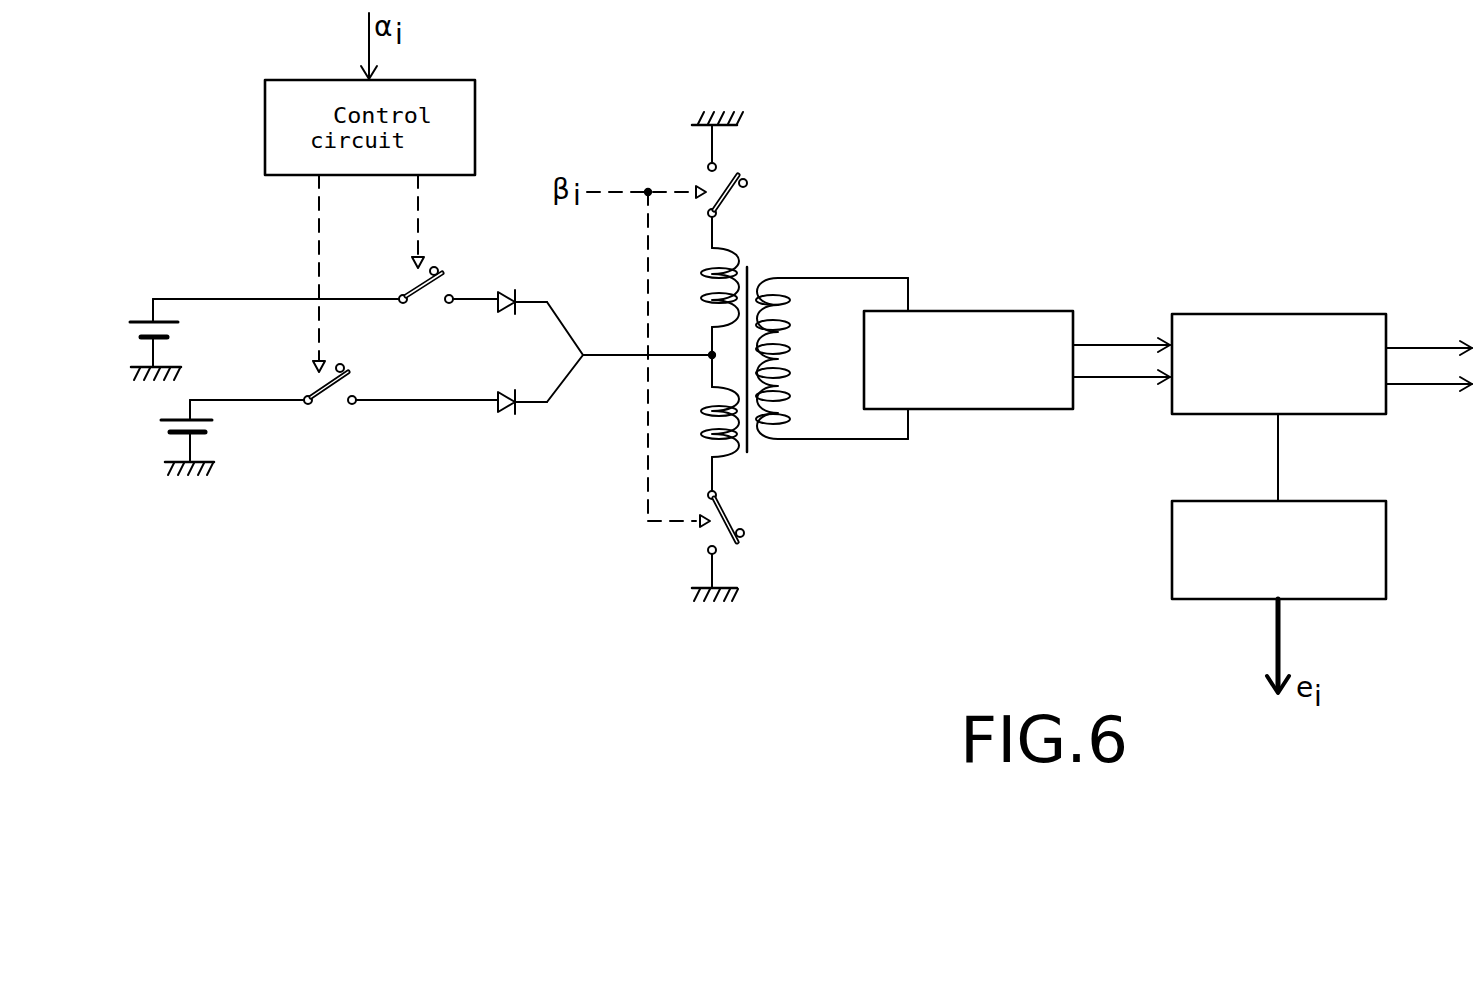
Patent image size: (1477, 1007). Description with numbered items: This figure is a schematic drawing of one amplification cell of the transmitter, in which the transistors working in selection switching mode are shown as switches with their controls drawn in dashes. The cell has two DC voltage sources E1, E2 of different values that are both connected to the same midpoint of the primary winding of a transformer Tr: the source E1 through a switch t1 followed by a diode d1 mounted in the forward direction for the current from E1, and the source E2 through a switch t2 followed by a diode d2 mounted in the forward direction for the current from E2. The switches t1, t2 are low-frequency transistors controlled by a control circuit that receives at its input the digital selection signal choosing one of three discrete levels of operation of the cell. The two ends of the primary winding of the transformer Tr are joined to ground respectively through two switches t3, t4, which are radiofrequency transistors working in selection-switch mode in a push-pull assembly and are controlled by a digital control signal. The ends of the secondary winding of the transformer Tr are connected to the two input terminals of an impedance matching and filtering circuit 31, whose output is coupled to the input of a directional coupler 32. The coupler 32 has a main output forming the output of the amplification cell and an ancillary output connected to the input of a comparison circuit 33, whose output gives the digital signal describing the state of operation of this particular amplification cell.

The DC voltage source E1 is at (178, 332).
The DC voltage source E2 is at (208, 432).
The switch t1 is at (420, 304).
The switch t2 is at (328, 394).
The switch t3 is at (733, 198).
The switch t4 is at (732, 515).
The diode d1 is at (517, 293).
The diode d2 is at (522, 411).
The transformer Tr is at (752, 257).
The impedance matching and filtering circuit 31 is at (1046, 318).
The directional coupler 32 is at (1225, 327).
The comparison circuit 33 is at (1227, 513).